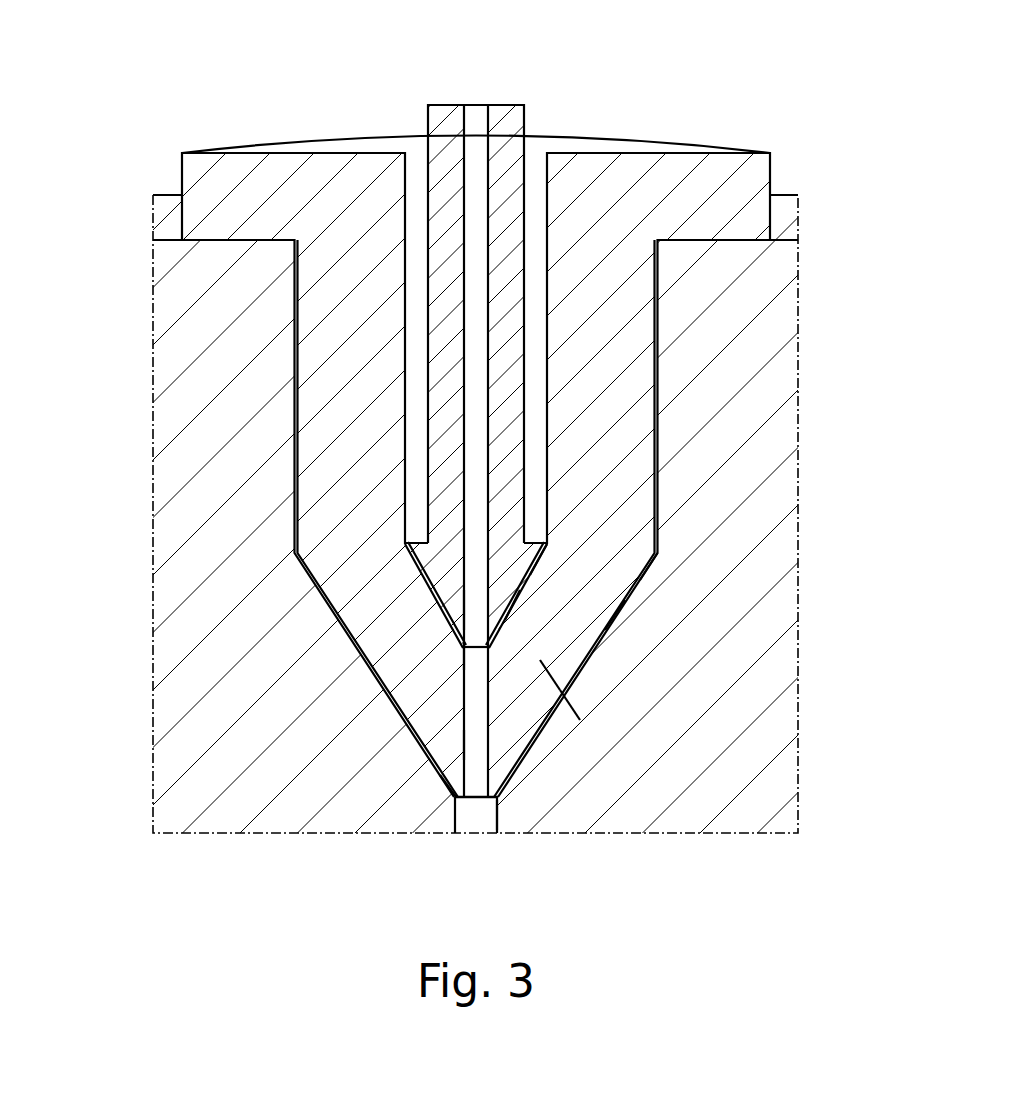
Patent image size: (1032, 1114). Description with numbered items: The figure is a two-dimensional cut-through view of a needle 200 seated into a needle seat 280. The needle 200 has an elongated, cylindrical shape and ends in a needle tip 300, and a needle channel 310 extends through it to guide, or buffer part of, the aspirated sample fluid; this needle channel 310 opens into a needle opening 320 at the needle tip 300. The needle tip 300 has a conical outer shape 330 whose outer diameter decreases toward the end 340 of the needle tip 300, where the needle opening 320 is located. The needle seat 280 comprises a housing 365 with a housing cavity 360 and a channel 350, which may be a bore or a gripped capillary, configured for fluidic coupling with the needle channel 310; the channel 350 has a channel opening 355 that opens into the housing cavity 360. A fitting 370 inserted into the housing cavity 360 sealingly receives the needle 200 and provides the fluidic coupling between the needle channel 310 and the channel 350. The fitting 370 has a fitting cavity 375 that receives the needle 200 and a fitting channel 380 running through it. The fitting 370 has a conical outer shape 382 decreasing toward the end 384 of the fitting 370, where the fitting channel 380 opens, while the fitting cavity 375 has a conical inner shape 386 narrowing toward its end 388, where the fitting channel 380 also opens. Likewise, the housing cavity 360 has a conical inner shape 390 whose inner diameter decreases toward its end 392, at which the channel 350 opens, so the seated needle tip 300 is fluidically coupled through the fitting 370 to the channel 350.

The needle 200 is at (503, 117).
The needle seat 280 is at (703, 103).
The needle tip 300 is at (507, 593).
The needle channel 310 is at (477, 117).
The needle opening 320 is at (477, 627).
The conical outer shape 330 is at (567, 703).
The end of the needle tip 340 is at (462, 610).
The channel 350 is at (470, 823).
The channel opening 355 is at (452, 795).
The housing cavity 360 is at (352, 106).
The housing 365 is at (173, 769).
The fitting 370 is at (250, 167).
The fitting cavity 375 is at (534, 167).
The fitting channel 380 is at (482, 741).
The conical outer shape 382 is at (620, 620).
The end of the fitting 384 is at (498, 797).
The conical inner shape 386 is at (533, 565).
The end of the fitting cavity 388 is at (462, 648).
The conical inner shape 390 is at (657, 573).
The end of the housing cavity 392 is at (553, 672).